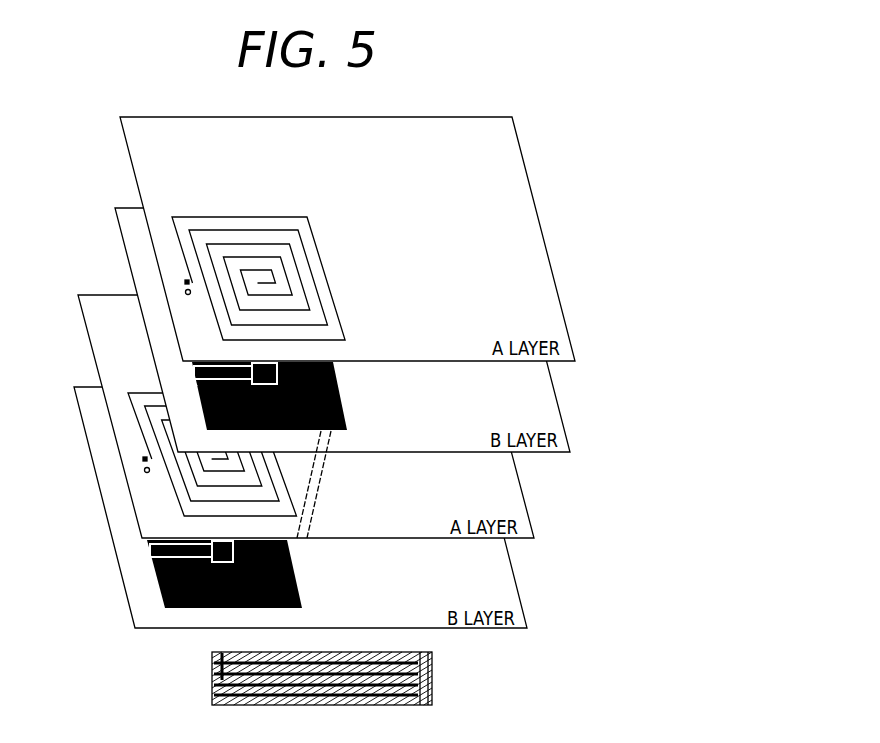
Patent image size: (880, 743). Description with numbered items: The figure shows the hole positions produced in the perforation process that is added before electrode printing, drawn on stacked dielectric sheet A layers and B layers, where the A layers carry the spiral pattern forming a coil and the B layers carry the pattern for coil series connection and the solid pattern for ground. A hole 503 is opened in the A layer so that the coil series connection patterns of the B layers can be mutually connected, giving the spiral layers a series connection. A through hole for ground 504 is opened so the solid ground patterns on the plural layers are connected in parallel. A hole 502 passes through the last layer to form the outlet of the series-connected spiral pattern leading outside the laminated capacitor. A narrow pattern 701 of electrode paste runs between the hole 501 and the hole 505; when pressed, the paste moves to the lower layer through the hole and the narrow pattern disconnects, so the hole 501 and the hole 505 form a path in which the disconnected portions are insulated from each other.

The hole 501 is at (193, 373).
The hole 502 is at (186, 292).
The hole 503 is at (257, 283).
The through hole for ground 504 is at (338, 383).
The hole 505 is at (193, 388).
The narrow pattern 701 is at (194, 380).